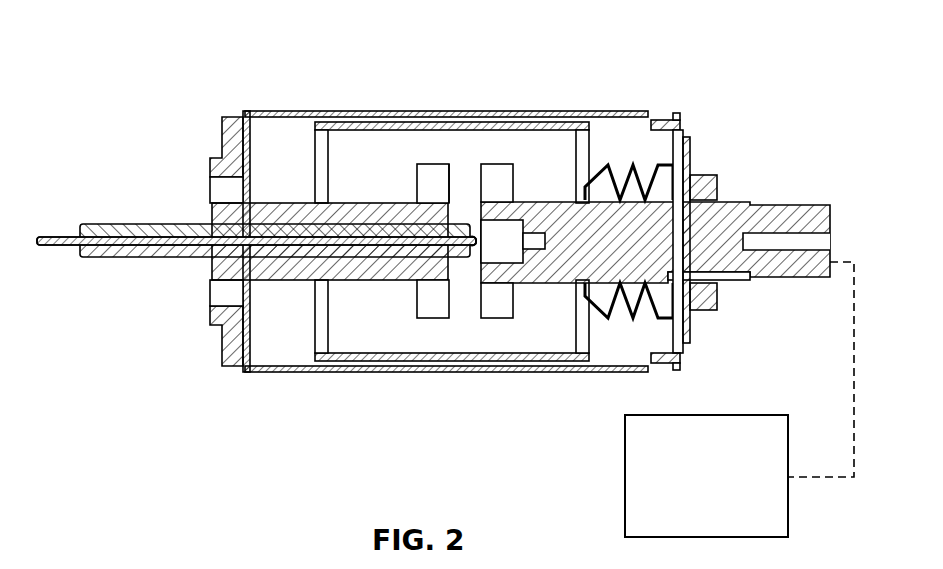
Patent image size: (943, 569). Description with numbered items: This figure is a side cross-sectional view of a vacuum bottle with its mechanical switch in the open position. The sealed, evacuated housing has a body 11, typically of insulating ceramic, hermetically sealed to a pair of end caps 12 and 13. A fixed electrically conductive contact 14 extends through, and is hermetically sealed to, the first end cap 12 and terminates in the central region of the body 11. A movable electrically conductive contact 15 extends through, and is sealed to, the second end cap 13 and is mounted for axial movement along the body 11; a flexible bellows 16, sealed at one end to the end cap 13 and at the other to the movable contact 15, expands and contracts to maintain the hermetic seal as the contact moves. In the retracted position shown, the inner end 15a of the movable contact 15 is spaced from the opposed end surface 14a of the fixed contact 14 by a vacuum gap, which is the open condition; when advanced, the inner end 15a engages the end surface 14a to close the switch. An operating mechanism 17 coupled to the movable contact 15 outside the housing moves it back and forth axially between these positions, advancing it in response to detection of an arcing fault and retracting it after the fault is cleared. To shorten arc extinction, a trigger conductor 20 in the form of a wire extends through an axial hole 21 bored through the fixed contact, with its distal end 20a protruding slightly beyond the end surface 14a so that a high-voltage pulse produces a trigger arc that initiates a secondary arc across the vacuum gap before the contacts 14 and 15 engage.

The body 11 is at (302, 372).
The first end cap 12 is at (237, 117).
The second end cap 13 is at (668, 120).
The fixed contact 14 is at (418, 164).
The end surface of the fixed contact 14a is at (456, 200).
The movable contact 15 is at (517, 163).
The inner end of the movable contact 15a is at (481, 163).
The flexible bellows 16 is at (622, 165).
The operating mechanism 17 is at (625, 519).
The trigger conductor 20 is at (40, 246).
The distal end of the trigger conductor 20a is at (470, 257).
The axial hole 21 is at (280, 215).